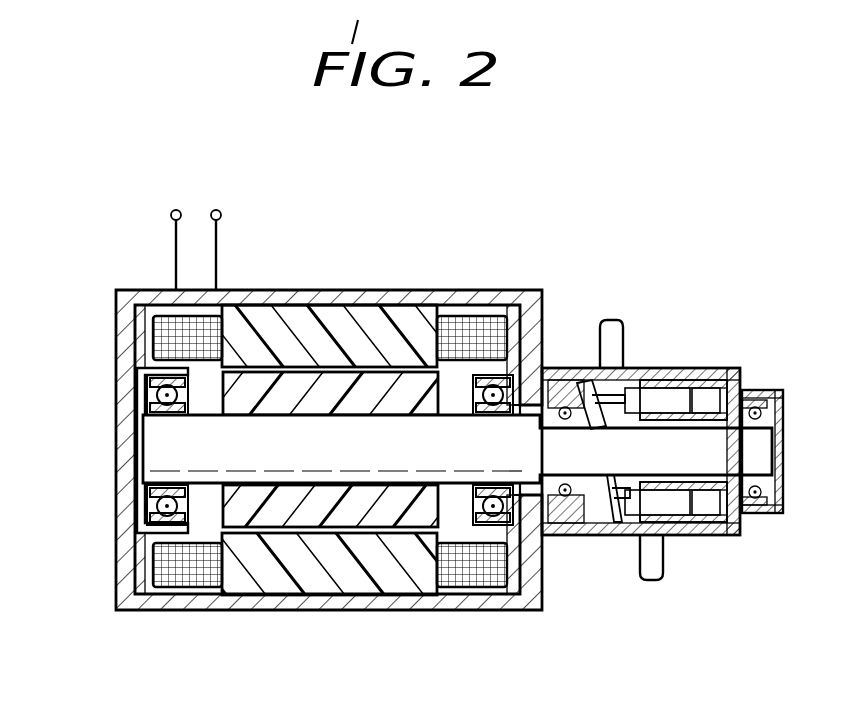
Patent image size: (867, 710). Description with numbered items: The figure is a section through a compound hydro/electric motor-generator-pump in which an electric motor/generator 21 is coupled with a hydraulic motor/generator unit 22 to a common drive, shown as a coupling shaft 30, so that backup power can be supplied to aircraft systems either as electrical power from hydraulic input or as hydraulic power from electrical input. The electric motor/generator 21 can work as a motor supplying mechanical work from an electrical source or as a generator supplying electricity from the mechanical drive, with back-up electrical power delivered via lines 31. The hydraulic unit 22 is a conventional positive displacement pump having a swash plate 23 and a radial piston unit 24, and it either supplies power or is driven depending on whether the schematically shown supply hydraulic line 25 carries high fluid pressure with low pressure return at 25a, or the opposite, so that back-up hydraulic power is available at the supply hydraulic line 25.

The electric motor/generator 21 is at (360, 278).
The hydraulic motor/generator unit 22 is at (702, 360).
The swash plate 23 is at (603, 500).
The radial piston unit 24 is at (705, 503).
The supply hydraulic line 25 is at (645, 572).
The low pressure return 25a is at (620, 345).
The coupling shaft 30 is at (457, 449).
The lines 31 is at (172, 244).